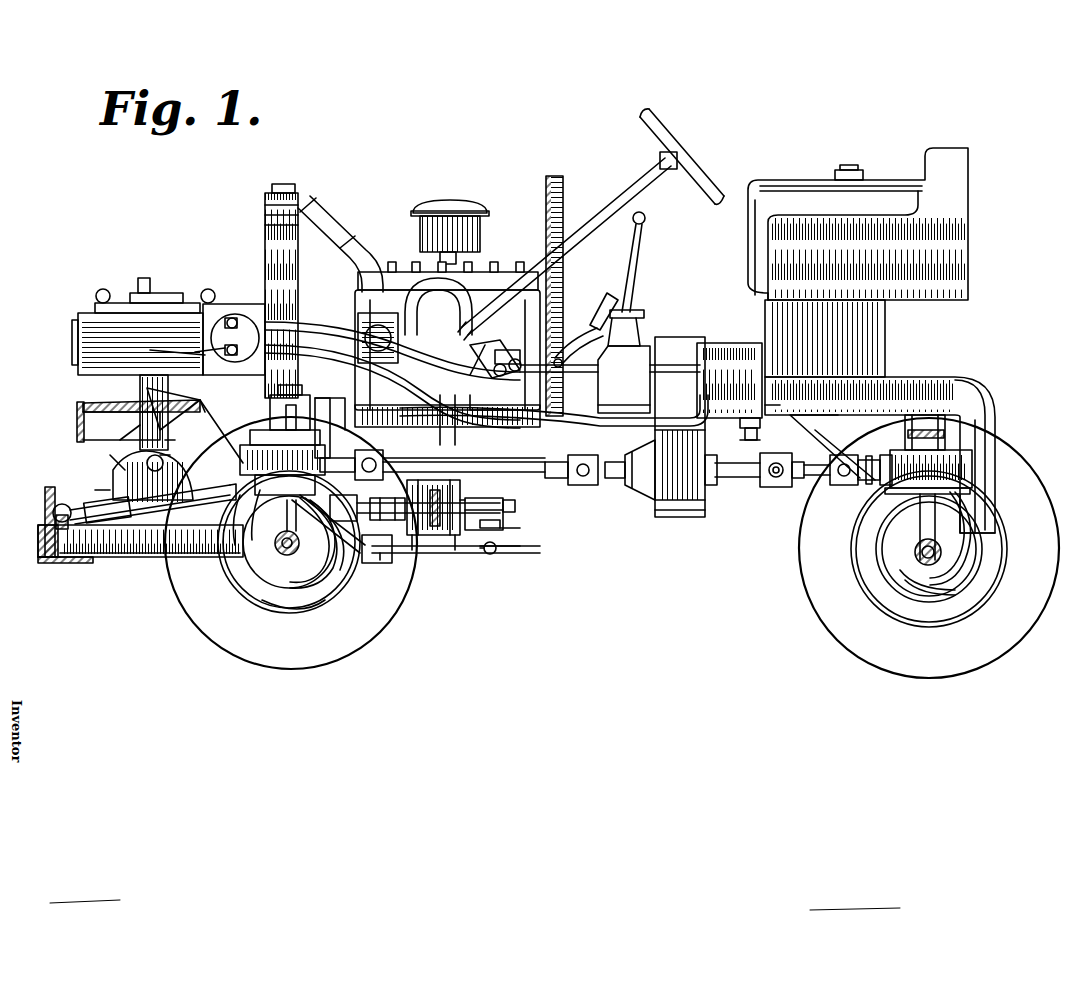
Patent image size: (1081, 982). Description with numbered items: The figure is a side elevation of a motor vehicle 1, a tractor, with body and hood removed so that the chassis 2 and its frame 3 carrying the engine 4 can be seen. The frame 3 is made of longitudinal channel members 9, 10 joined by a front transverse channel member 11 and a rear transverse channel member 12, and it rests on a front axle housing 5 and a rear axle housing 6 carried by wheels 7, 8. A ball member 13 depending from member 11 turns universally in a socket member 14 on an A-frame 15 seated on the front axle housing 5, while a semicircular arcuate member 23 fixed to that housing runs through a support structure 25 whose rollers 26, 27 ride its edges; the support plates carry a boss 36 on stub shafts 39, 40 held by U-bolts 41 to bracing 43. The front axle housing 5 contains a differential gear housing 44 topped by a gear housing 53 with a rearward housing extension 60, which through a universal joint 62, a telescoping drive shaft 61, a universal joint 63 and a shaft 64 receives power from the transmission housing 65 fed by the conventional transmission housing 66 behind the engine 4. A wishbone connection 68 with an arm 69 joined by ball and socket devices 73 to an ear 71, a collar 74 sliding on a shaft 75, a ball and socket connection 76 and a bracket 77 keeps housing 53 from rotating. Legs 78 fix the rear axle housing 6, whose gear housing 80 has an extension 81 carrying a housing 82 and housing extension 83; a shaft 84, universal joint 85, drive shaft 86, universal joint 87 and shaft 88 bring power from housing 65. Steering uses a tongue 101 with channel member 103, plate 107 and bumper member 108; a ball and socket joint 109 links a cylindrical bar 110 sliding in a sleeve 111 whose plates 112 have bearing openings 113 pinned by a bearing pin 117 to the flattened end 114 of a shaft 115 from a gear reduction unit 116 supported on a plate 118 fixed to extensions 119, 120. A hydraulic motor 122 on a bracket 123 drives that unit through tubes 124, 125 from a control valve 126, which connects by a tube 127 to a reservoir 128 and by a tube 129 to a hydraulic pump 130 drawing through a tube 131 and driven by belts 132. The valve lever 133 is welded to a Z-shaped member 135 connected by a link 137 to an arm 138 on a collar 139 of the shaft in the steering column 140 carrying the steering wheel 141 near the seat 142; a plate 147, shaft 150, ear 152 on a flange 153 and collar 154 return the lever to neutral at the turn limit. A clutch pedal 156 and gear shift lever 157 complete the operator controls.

The motor vehicle 1 is at (648, 345).
The chassis 2 is at (978, 386).
The frame 3 is at (718, 420).
The engine 4 is at (492, 278).
The front axle housing 5 is at (289, 542).
The rear axle housing 6 is at (960, 563).
The front wheels 7 is at (195, 598).
The rear wheels 8 is at (815, 590).
The longitudinal channel member 9 is at (762, 415).
The longitudinal channel member 10 is at (898, 384).
The front transverse channel member 11 is at (333, 409).
The rear transverse channel member 12 is at (950, 432).
The ball member 13 is at (331, 428).
The spherical socket member 14 is at (270, 420).
The A-frame 15 is at (250, 444).
The arcuate member 23 is at (425, 535).
The support structure 25 is at (480, 553).
The roller 26 is at (500, 494).
The roller 27 is at (395, 556).
The boss 36 is at (503, 522).
The stub shaft 39 is at (387, 520).
The stub shaft 40 is at (510, 510).
The U-bolts 41 is at (560, 500).
The bracing 43 is at (535, 463).
The differential gear housing 44 is at (272, 580).
The gear housing 53 is at (245, 462).
The housing extension 60 is at (348, 503).
The drive shaft 61 is at (575, 465).
The universal joint 62 is at (392, 434).
The universal joint 63 is at (612, 482).
The shaft 64 is at (620, 490).
The transmission housing 65 is at (644, 492).
The transmission housing 66 is at (650, 322).
The wishbone connection 68 is at (418, 552).
The arm 69 is at (352, 535).
The ear 71 is at (301, 543).
The ball and socket devices 73 is at (277, 544).
The collar 74 is at (386, 562).
The shaft 75 is at (497, 550).
The ball and socket connection 76 is at (540, 548).
The bracket 77 is at (525, 527).
The legs 78 is at (990, 508).
The gear housing 80 is at (922, 588).
The vertically arranged extension 81 is at (975, 540).
The housing 82 is at (972, 478).
The housing extension 83 is at (888, 454).
The shaft 84 is at (858, 488).
The universal joint 85 is at (845, 480).
The drive shaft 86 is at (815, 478).
The universal joint 87 is at (772, 488).
The shaft 88 is at (730, 482).
The tongue 101 is at (92, 558).
The channel member 103 is at (118, 560).
The plate 107 is at (45, 560).
The bumper member 108 is at (45, 503).
The ball and socket joint 109 is at (62, 508).
The cylindrical bar 110 is at (85, 495).
The sleeve 111 is at (100, 500).
The plates 112 is at (135, 460).
The bearing openings 113 is at (153, 476).
The flattened end 114 is at (162, 452).
The shaft 115 is at (160, 440).
The gear reduction unit 116 is at (84, 320).
The bearing pin 117 is at (172, 412).
The plate 118 is at (75, 428).
The extension 119 is at (110, 392).
The extension 120 is at (80, 403).
The hydraulic motor 122 is at (222, 306).
The bracket 123 is at (210, 290).
The tube 124 is at (220, 345).
The tube 125 is at (160, 341).
The control valve 126 is at (508, 360).
The tube 127 is at (672, 352).
The fluid reservoir 128 is at (750, 384).
The tube 129 is at (411, 316).
The hydraulic pump 130 is at (378, 325).
The tube 131 is at (604, 428).
The belts 132 is at (345, 254).
The lever 133 is at (495, 409).
The Z-shaped member 135 is at (445, 402).
The link 137 is at (422, 350).
The arm 138 is at (480, 340).
The collar 139 is at (428, 386).
The steering column 140 is at (580, 222).
The steering wheel 141 is at (690, 160).
The seat 142 is at (935, 150).
The plate 147 is at (320, 240).
The shaft 150 is at (221, 425).
The ear 152 is at (245, 520).
The flange 153 is at (255, 513).
The collar 154 is at (153, 505).
The clutch pedal 156 is at (578, 318).
The gear shift lever 157 is at (640, 243).